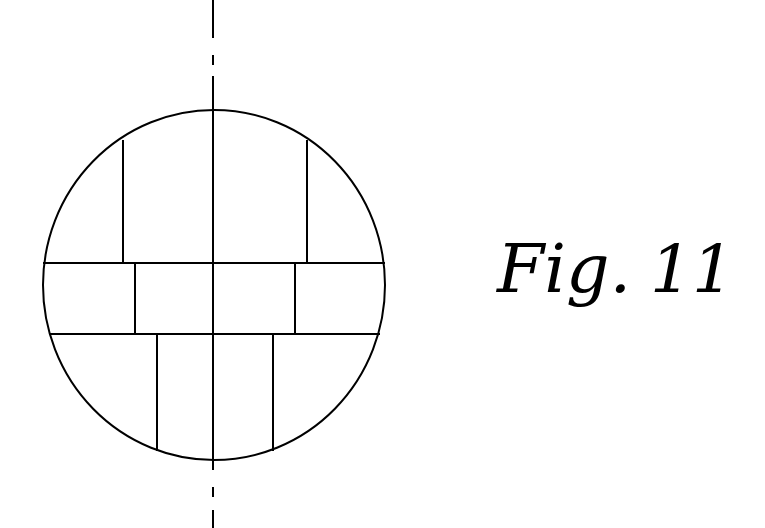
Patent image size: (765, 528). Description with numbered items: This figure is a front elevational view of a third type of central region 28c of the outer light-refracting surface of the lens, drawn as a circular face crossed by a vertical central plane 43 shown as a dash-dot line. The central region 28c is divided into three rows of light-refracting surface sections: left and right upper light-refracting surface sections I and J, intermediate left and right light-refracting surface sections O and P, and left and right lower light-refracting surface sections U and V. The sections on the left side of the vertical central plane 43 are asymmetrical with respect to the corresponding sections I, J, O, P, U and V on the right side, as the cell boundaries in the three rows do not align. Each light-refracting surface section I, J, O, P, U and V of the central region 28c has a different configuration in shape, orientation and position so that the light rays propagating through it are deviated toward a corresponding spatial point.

The central region 28c is at (288, 162).
The vertical central plane 43 is at (213, 33).
The upper light-refracting surface section J is at (199, 201).
The upper light-refracting surface section I is at (203, 227).
The intermediate light-refracting surface section P is at (214, 298).
The intermediate light-refracting surface section O is at (211, 300).
The lower light-refracting surface section V is at (215, 392).
The lower light-refracting surface section U is at (213, 378).